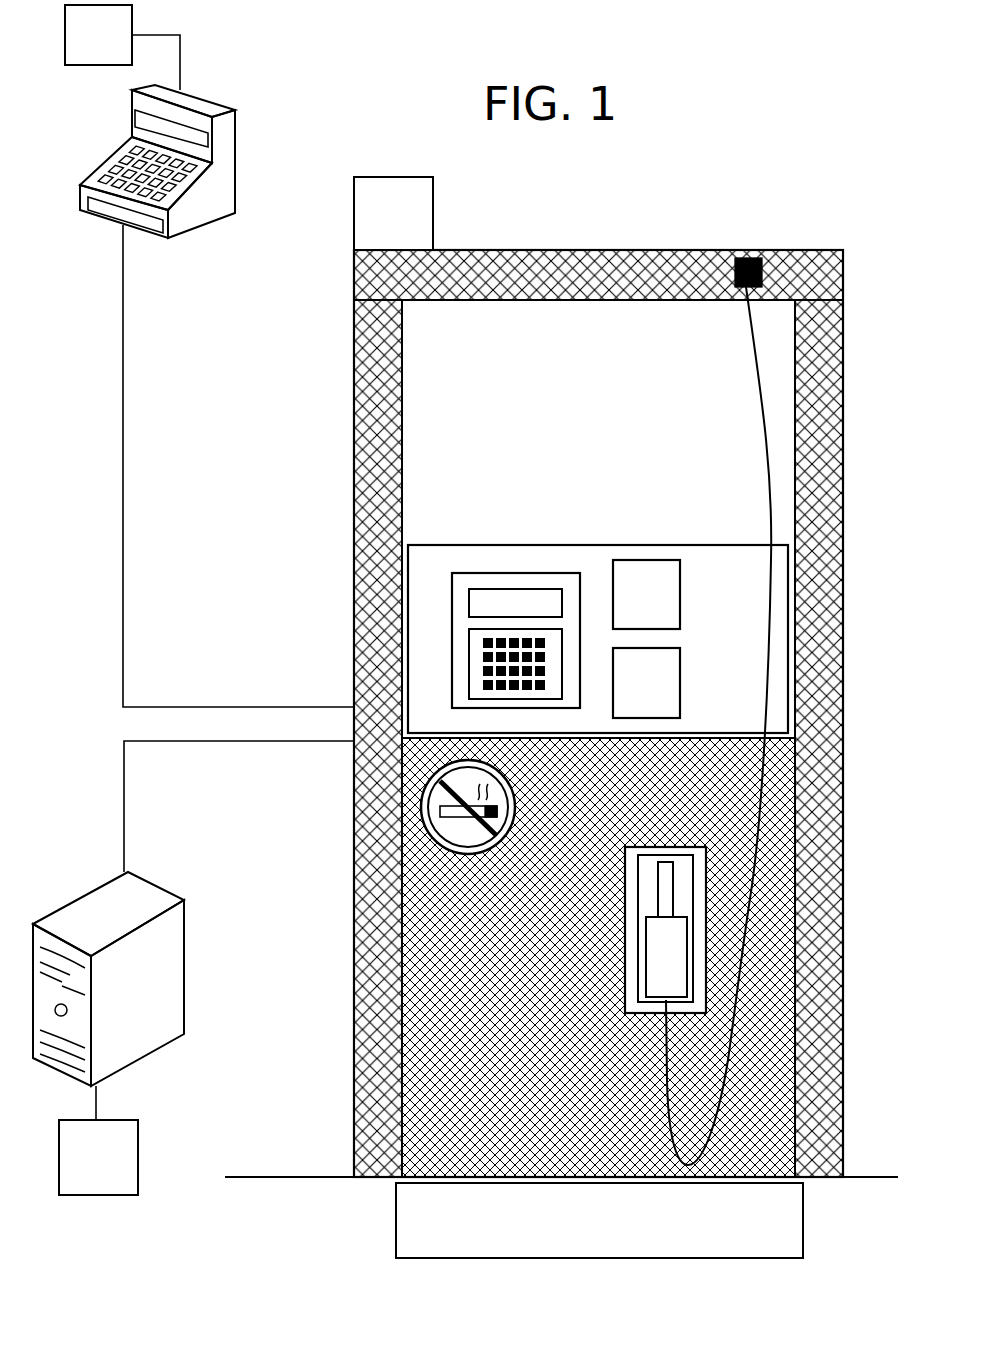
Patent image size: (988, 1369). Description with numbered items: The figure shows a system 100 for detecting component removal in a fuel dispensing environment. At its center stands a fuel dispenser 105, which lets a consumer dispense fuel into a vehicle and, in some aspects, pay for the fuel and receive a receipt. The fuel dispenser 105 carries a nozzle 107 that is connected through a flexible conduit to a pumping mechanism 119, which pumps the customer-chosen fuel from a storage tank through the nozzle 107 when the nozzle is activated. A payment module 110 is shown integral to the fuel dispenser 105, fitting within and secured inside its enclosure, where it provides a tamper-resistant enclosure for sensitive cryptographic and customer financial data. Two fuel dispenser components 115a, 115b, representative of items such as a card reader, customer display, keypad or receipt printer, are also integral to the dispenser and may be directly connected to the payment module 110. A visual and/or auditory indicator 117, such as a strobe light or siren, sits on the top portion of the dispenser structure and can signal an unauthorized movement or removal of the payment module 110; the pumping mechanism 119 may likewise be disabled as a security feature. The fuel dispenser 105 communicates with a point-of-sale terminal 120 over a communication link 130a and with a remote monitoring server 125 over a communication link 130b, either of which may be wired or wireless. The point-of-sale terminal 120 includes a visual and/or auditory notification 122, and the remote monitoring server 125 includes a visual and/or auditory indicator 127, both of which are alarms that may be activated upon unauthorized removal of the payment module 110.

The system 100 is at (733, 155).
The fuel dispenser 105 is at (555, 250).
The nozzle 107 is at (665, 889).
The payment module 110 is at (475, 577).
The fuel dispenser component 115a is at (643, 560).
The fuel dispenser component 115b is at (680, 678).
The visual and/or auditory indicator 117 is at (415, 225).
The pumping mechanism 119 is at (621, 1234).
The point-of-sale terminal 120 is at (230, 110).
The visual and/or auditory notification 122 is at (120, 47).
The remote monitoring server 125 is at (184, 954).
The visual and/or auditory indicator 127 is at (120, 1170).
The communication link 130a is at (123, 408).
The communication link 130b is at (124, 775).